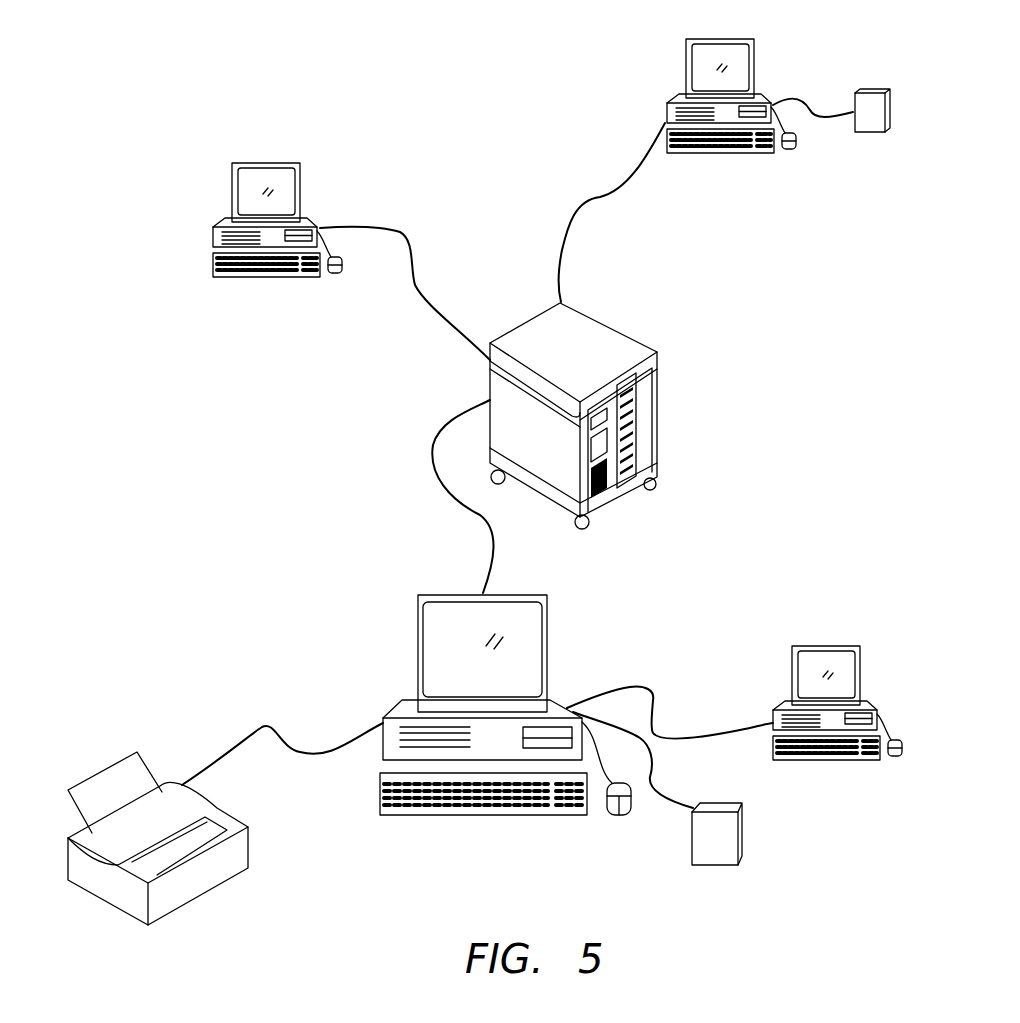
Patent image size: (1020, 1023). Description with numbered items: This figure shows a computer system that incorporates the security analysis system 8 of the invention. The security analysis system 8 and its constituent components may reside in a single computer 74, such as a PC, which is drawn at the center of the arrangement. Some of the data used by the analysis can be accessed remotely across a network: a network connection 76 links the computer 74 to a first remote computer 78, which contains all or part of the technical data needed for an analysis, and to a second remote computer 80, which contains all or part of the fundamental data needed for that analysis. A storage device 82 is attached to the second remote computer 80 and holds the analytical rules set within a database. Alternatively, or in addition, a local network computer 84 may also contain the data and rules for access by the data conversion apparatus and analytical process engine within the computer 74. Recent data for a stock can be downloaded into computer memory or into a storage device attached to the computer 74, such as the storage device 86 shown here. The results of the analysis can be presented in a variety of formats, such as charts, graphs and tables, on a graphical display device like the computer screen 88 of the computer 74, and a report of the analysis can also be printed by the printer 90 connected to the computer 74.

The security analysis system 8 is at (272, 404).
The computer 74 is at (557, 700).
The network connection 76 is at (433, 445).
The first remote computer 78 is at (225, 218).
The second remote computer 80 is at (677, 97).
The storage device 82 is at (868, 88).
The local network computer 84 is at (823, 647).
The storage device 86 is at (742, 832).
The computer screen 88 is at (548, 600).
The printer 90 is at (230, 880).